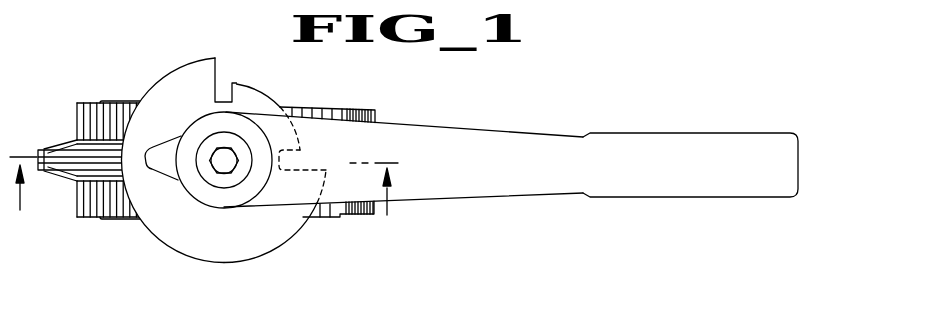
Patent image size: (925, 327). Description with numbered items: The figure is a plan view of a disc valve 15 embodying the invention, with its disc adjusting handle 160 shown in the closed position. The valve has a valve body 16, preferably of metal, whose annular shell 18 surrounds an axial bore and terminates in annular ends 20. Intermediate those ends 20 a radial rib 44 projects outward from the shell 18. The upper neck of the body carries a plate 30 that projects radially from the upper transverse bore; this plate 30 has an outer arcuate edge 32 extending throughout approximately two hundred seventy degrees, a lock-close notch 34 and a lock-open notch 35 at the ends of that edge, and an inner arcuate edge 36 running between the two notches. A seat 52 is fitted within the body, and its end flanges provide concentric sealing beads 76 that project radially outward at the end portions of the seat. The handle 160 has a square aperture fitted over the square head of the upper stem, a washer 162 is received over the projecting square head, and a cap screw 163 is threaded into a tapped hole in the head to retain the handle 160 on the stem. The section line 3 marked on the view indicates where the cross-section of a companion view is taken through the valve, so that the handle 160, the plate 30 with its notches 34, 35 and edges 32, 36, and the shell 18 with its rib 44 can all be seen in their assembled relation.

The section line 3- 3 is at (204, 171).
The disc valve 15 is at (247, 268).
The valve body 16 is at (77, 208).
The annular shell 18 is at (377, 118).
The annular ends 20 is at (367, 108).
The plate 30 is at (180, 68).
The outer arcuate edge 32 is at (163, 77).
The lock-close notch 34 is at (300, 168).
The lock-open notch 35 is at (219, 83).
The inner arcuate edge 36 is at (250, 88).
The radial rib 44 is at (70, 165).
The seat 52 is at (108, 218).
The concentric sealing beads 76 is at (320, 106).
The handle 160 is at (622, 174).
The washer 162 is at (207, 175).
The cap screw 163 is at (221, 147).